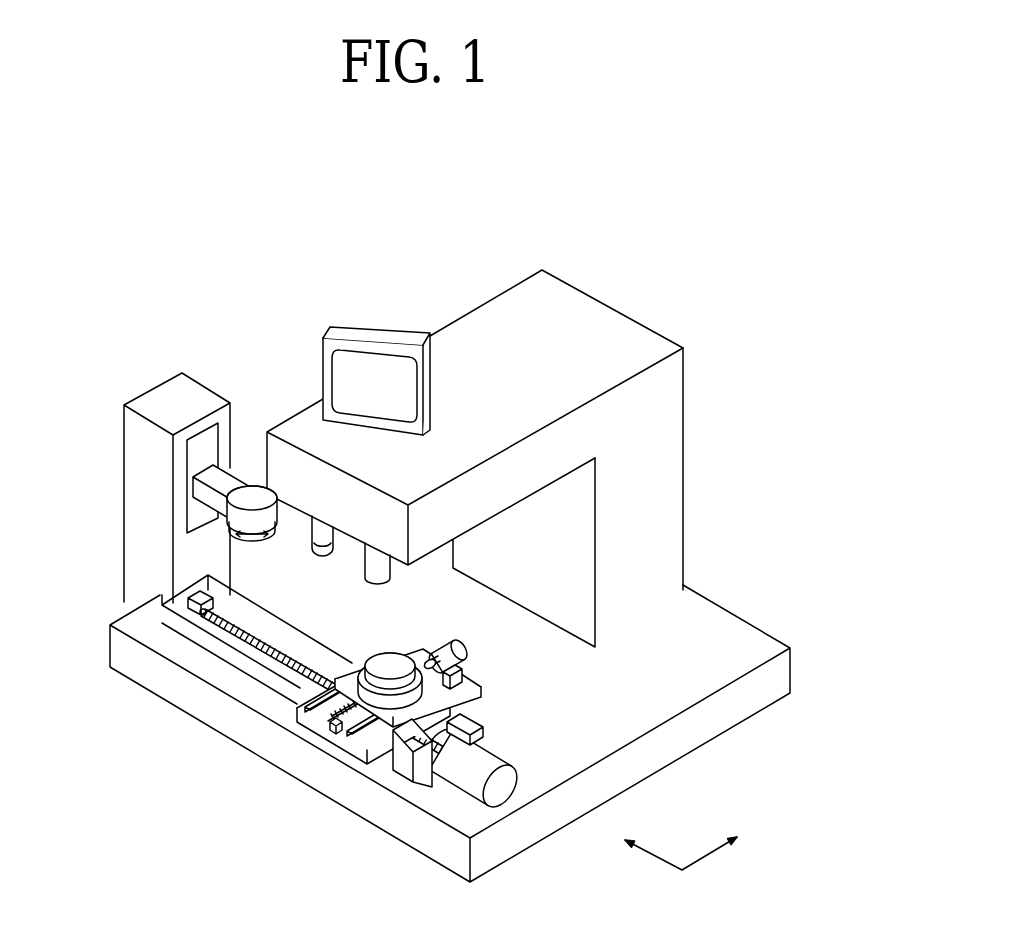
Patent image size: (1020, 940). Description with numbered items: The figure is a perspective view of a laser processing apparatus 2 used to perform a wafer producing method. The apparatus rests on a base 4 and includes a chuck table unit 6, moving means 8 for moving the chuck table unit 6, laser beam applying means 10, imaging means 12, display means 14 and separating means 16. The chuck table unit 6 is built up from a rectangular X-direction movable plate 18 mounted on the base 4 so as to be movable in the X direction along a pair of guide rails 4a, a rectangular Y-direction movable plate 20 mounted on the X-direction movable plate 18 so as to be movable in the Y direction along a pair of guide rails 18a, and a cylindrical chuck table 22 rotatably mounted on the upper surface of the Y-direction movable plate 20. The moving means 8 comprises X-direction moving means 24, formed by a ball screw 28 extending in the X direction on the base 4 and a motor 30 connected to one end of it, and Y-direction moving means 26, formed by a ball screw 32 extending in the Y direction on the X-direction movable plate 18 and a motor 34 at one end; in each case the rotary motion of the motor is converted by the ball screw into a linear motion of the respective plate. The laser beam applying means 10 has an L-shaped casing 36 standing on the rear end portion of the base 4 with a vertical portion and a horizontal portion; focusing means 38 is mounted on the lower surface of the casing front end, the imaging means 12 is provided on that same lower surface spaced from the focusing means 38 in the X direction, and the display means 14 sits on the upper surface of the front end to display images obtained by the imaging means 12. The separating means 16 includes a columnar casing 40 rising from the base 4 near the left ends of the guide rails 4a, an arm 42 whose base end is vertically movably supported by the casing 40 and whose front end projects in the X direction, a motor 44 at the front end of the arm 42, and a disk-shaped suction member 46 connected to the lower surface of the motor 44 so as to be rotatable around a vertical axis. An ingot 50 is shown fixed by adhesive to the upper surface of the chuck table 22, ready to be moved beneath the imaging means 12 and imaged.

The laser processing apparatus 2 is at (215, 292).
The base 4 is at (717, 628).
The guide rails 4a is at (213, 590).
The chuck table unit 6 is at (396, 747).
The moving means 8 is at (563, 648).
The laser beam applying means 10 is at (476, 304).
The imaging means 12 is at (377, 565).
The display means 14 is at (391, 337).
The separating means 16 is at (207, 383).
The X-direction movable plate 18 is at (341, 756).
The guide rails 18a is at (355, 740).
The Y-direction movable plate 20 is at (401, 752).
The chuck table 22 is at (417, 733).
The X-direction moving means 24 is at (522, 698).
The Y-direction moving means 26 is at (522, 633).
The ball screw 28 is at (462, 719).
The motor 30 is at (483, 762).
The ball screw 32 is at (457, 677).
The motor 34 is at (457, 654).
The L-shaped casing 36 is at (672, 468).
The focusing means 38 is at (311, 547).
The columnar casing 40 is at (134, 447).
The arm 42 is at (222, 478).
The motor 44 is at (253, 487).
The suction member 46 is at (229, 546).
The ingot 50 is at (389, 656).